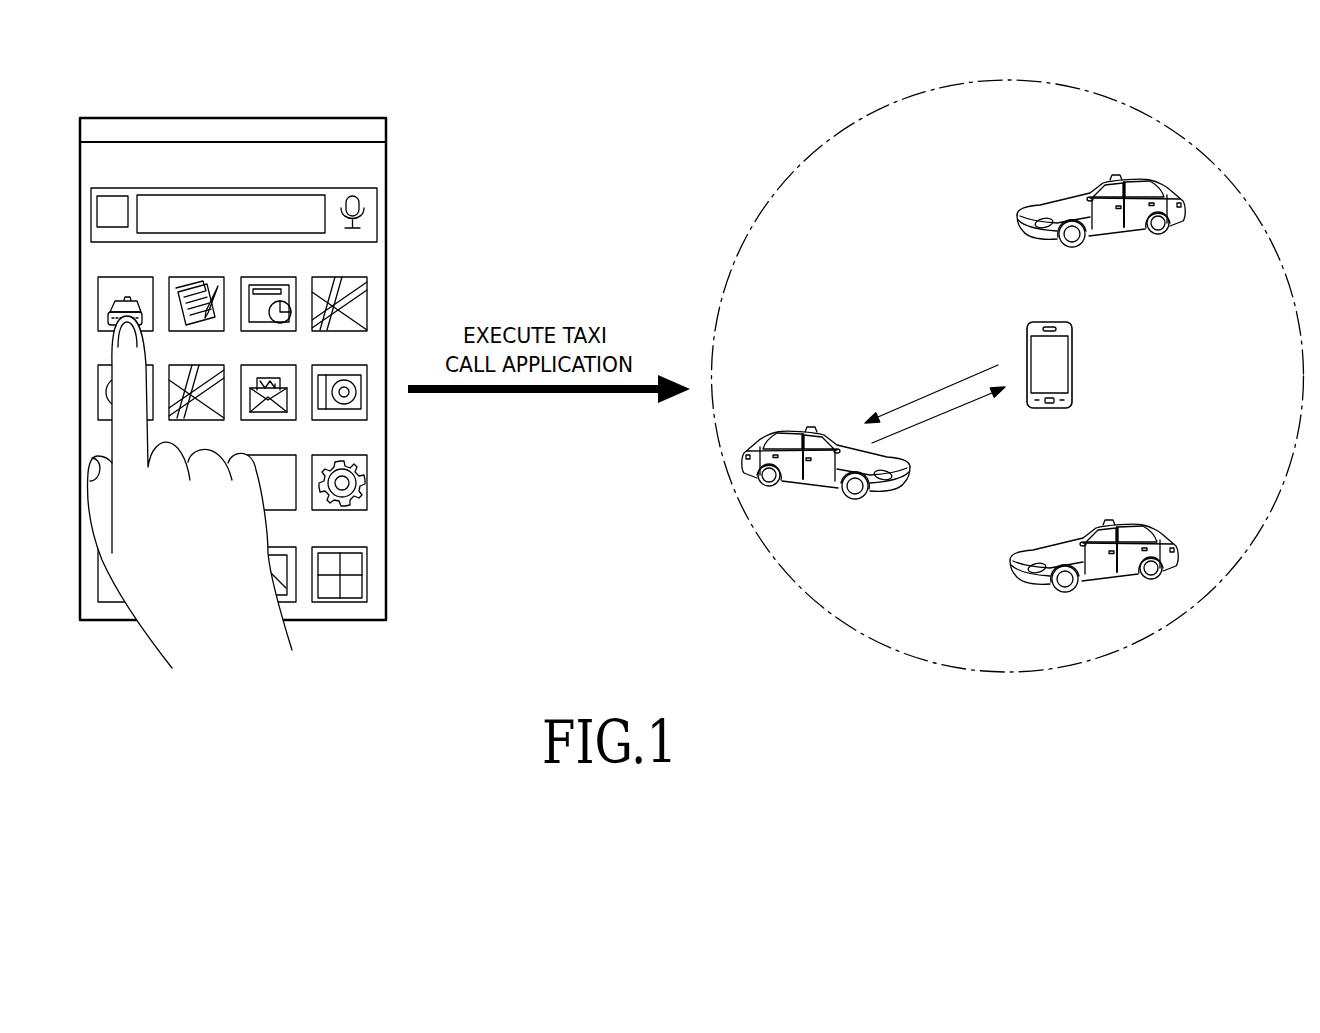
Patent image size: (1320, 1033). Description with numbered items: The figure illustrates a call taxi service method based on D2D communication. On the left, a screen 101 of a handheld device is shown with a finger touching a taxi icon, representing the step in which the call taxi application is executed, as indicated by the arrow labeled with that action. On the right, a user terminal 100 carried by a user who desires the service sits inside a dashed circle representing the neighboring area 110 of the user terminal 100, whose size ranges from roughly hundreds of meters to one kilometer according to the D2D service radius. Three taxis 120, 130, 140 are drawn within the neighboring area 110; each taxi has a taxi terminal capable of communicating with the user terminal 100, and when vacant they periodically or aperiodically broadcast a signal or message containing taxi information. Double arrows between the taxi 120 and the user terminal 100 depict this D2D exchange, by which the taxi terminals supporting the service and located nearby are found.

The user terminal 100 is at (1075, 362).
The display screen of electronic device with taxi call application icon 101 is at (231, 117).
The neighboring area 110 is at (1006, 80).
The taxi 120 is at (786, 432).
The taxi 130 is at (1086, 180).
The taxi 140 is at (1078, 522).